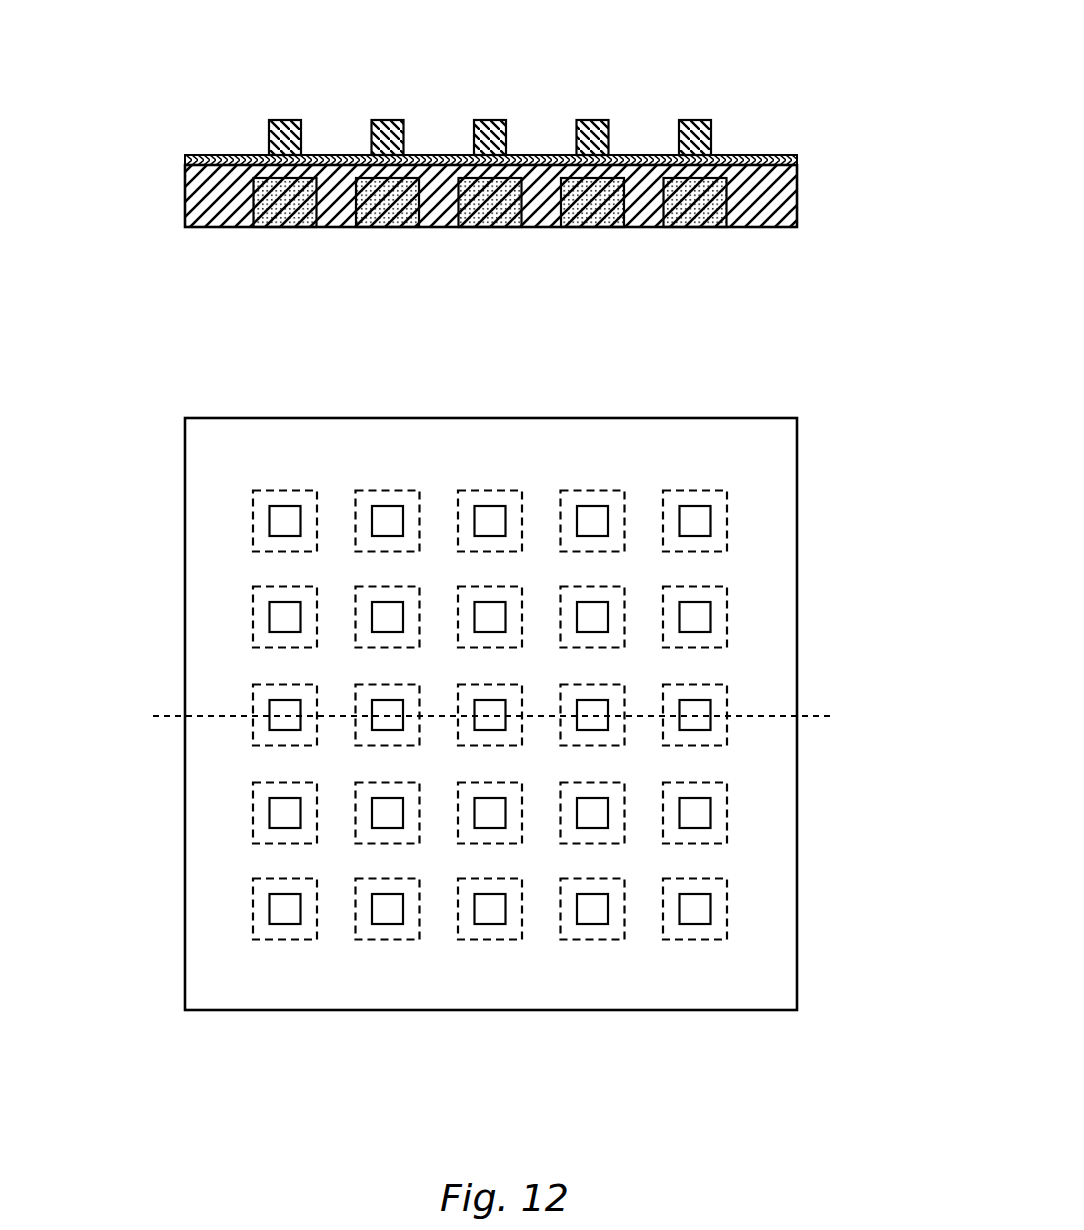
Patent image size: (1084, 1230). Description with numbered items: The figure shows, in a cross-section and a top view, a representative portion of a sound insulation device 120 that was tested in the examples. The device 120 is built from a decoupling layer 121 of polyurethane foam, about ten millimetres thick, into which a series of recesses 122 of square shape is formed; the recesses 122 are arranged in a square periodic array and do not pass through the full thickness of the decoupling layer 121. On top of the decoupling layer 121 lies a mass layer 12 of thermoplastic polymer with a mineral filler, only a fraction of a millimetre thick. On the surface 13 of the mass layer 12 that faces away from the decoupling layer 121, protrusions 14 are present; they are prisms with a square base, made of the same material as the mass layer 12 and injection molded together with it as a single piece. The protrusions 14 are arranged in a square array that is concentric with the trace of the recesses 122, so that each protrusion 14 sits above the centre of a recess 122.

The mass layer 12 is at (466, 518).
The surface of the mass layer 13 is at (217, 155).
The protrusions 14 is at (692, 118).
The device 120 is at (503, 505).
The decoupling layer 121 is at (183, 208).
The recesses 122 is at (495, 198).